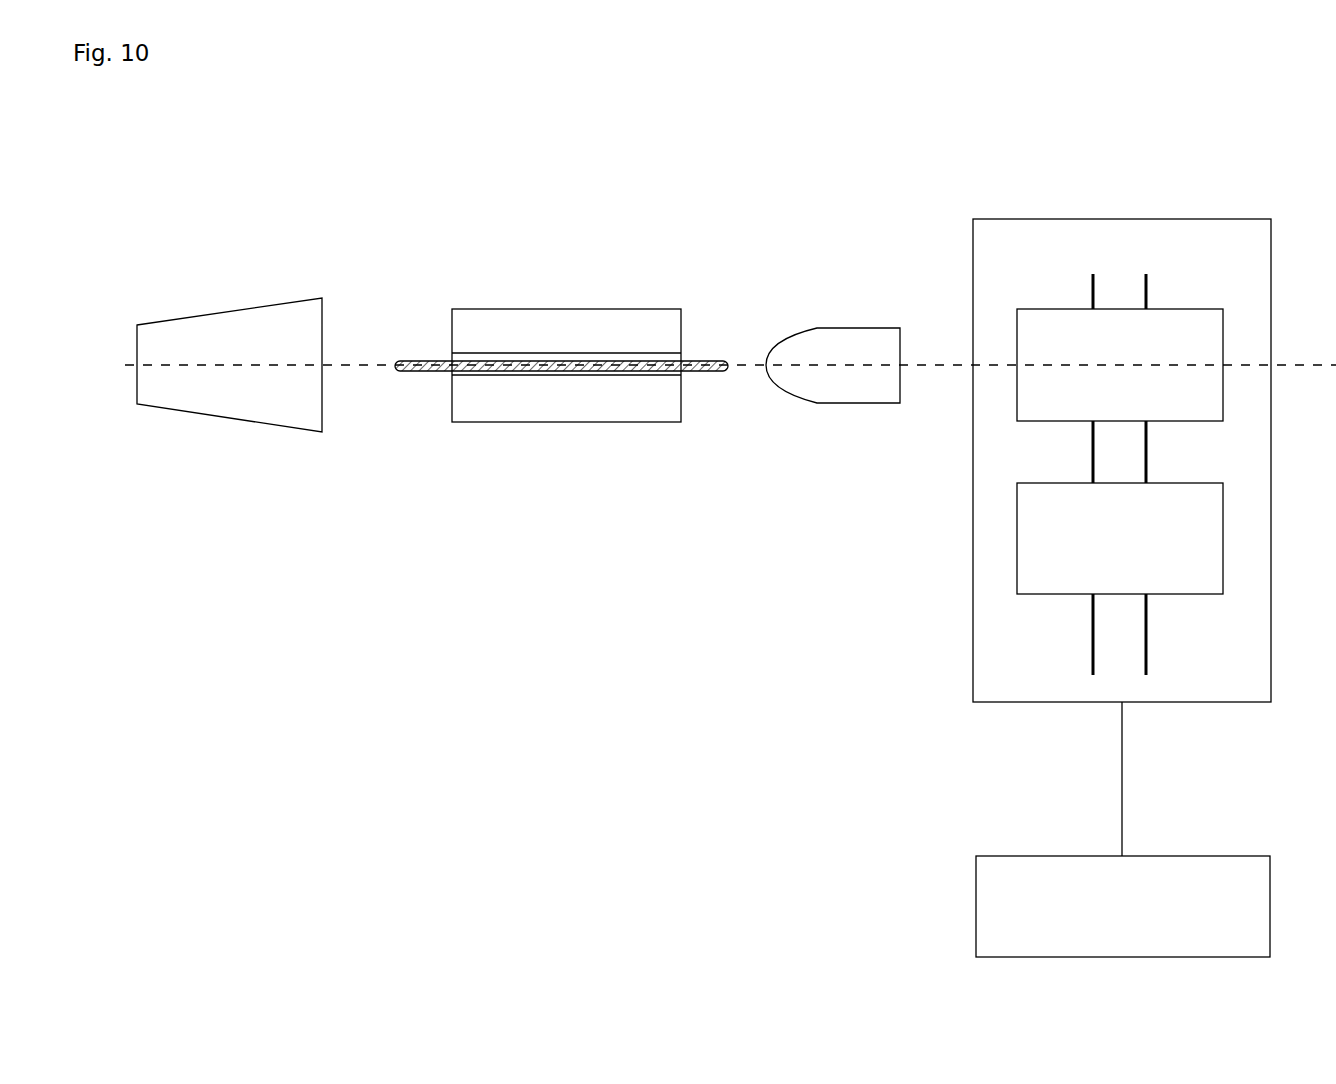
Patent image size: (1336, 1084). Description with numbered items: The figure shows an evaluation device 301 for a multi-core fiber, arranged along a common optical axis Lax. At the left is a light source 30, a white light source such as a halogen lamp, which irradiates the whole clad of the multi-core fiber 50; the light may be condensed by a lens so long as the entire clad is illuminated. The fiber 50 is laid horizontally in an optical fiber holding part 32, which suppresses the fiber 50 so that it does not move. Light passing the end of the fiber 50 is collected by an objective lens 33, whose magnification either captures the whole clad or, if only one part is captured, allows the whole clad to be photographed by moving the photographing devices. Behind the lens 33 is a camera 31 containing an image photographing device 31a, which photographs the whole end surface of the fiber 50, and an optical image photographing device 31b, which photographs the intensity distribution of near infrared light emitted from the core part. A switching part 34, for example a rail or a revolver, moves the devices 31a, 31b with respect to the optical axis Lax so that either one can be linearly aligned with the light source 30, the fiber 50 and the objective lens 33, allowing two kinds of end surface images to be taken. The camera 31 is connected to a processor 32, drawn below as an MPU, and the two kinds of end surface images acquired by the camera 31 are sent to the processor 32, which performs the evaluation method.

The light source 30 is at (266, 305).
The optical fiber holding part / processor 32 is at (578, 309).
The multi-core fiber 50 is at (415, 360).
The objective lens 33 is at (843, 328).
The evaluation device 301 is at (850, 193).
The camera 31 is at (1083, 219).
The image photographing device 31a is at (1225, 393).
The optical image photographing device 31b is at (1225, 567).
The switching part 34 is at (1091, 642).
The optical axis Lax is at (362, 370).